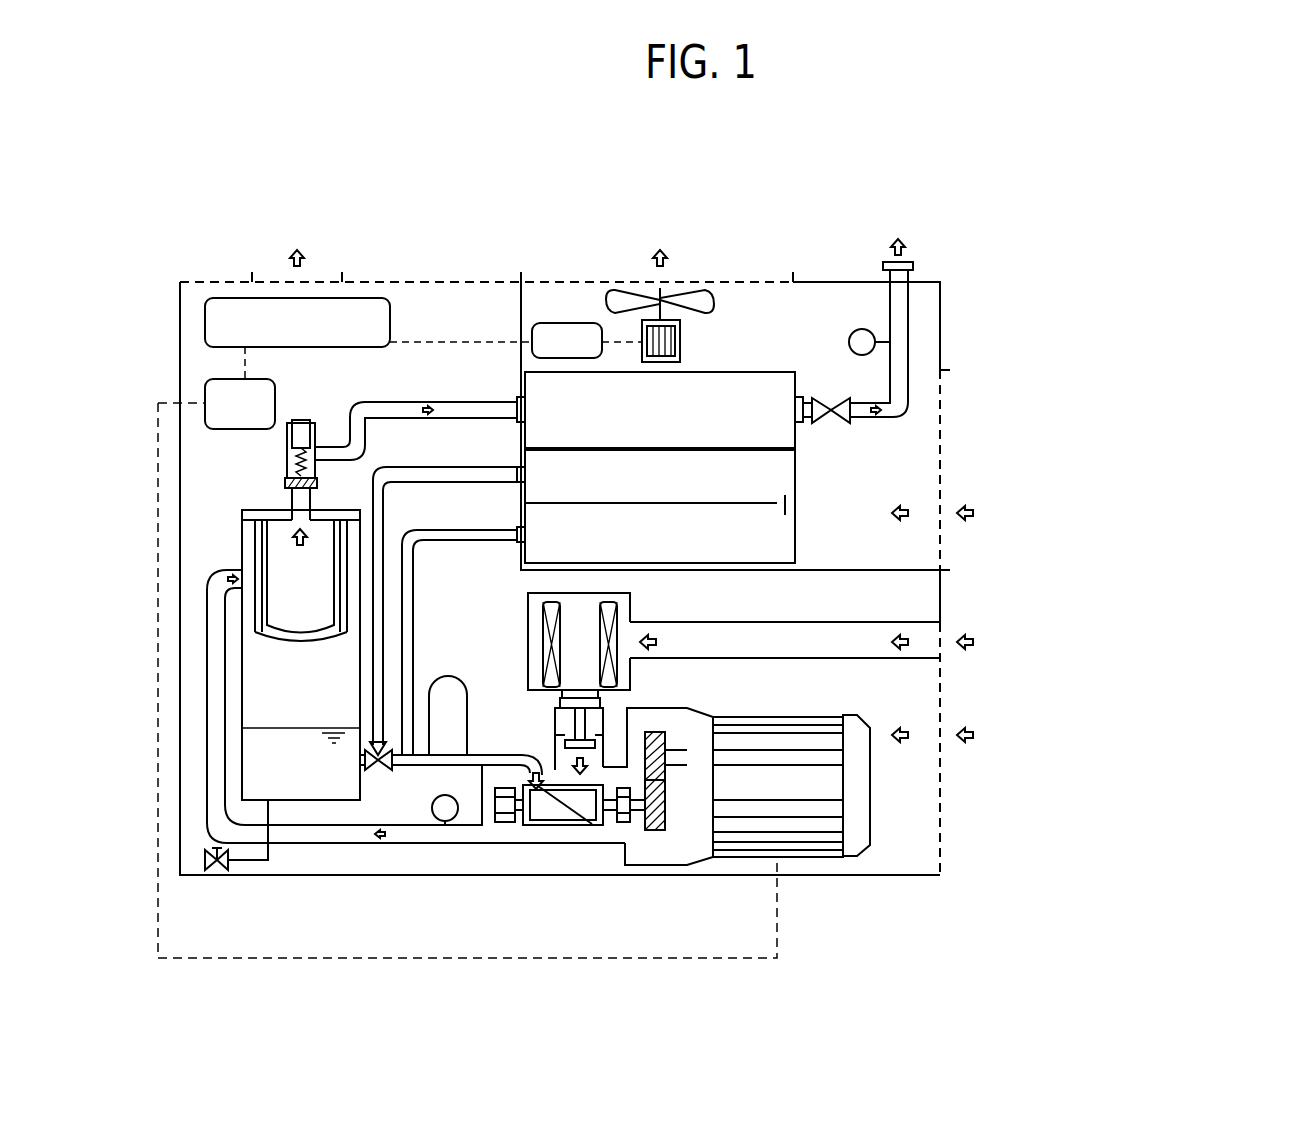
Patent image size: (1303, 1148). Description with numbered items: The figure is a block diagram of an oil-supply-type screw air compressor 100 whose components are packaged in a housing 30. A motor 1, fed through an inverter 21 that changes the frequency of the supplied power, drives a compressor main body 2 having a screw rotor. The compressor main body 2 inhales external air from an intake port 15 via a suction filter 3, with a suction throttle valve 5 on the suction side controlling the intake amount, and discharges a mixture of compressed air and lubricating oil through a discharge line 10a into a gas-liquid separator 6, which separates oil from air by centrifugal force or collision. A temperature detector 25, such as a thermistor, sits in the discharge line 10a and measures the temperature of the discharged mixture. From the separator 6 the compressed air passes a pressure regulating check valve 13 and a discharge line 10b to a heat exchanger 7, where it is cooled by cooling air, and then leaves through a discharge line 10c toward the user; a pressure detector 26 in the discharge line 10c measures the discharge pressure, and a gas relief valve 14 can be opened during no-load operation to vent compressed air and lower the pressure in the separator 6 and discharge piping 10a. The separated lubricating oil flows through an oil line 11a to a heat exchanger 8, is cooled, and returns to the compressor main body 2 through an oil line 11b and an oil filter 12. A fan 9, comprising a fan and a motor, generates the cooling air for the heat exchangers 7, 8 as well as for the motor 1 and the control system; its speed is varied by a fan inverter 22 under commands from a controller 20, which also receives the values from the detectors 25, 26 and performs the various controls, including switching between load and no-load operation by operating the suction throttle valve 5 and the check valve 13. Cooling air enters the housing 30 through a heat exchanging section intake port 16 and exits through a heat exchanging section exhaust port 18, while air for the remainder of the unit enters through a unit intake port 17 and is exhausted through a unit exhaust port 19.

The air compressor 100 is at (272, 174).
The motor 1 is at (760, 715).
The compressor main body 2 is at (566, 830).
The suction filter 3 is at (630, 600).
The suction throttle valve 5 is at (555, 748).
The gas-liquid separator 6 is at (242, 548).
The heat exchanger 7 is at (770, 372).
The heat exchanger 8 is at (795, 540).
The fan 9 is at (680, 330).
The discharge line 10a is at (312, 843).
The discharge line 10b is at (405, 405).
The discharge line 10c is at (913, 266).
The oil line 11a is at (405, 468).
The oil line 11b is at (418, 530).
The oil filter 12 is at (455, 678).
The pressure regulating check valve 13 is at (287, 460).
The gas relief valve 14 is at (838, 425).
The intake port 15 is at (945, 640).
The heat exchanging section intake port 16 is at (940, 400).
The unit intake port 17 is at (942, 783).
The heat exchanging section exhaust port 18 is at (730, 281).
The unit exhaust port 19 is at (315, 281).
The controller 20 is at (390, 318).
The inverter 21 is at (275, 402).
The fan inverter 22 is at (562, 323).
The temperature detector 25 is at (430, 808).
The pressure detector 26 is at (850, 333).
The housing 30 is at (212, 281).